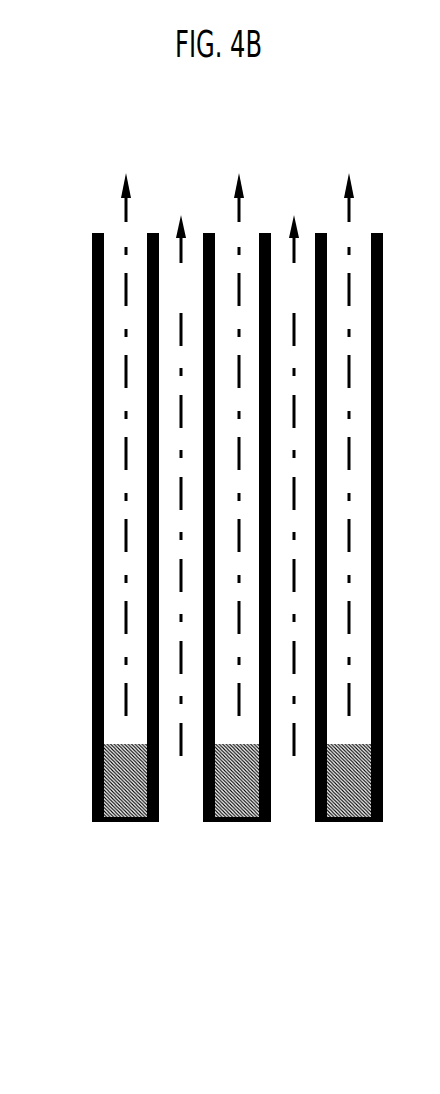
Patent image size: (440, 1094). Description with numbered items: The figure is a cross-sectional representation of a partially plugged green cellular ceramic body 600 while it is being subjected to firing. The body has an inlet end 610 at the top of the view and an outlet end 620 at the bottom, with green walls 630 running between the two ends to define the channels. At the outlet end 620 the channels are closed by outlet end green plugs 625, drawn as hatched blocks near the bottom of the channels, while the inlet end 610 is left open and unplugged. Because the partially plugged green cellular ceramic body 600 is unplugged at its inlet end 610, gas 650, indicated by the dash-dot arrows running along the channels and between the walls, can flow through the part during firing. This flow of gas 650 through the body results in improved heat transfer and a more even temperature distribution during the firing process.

The partially plugged green cellular ceramic body 600 is at (182, 336).
The inlet end 610 is at (92, 237).
The outlet end 620 is at (92, 822).
The outlet end green plugs 625 is at (233, 802).
The green walls 630 is at (160, 800).
The gas 650 is at (243, 207).